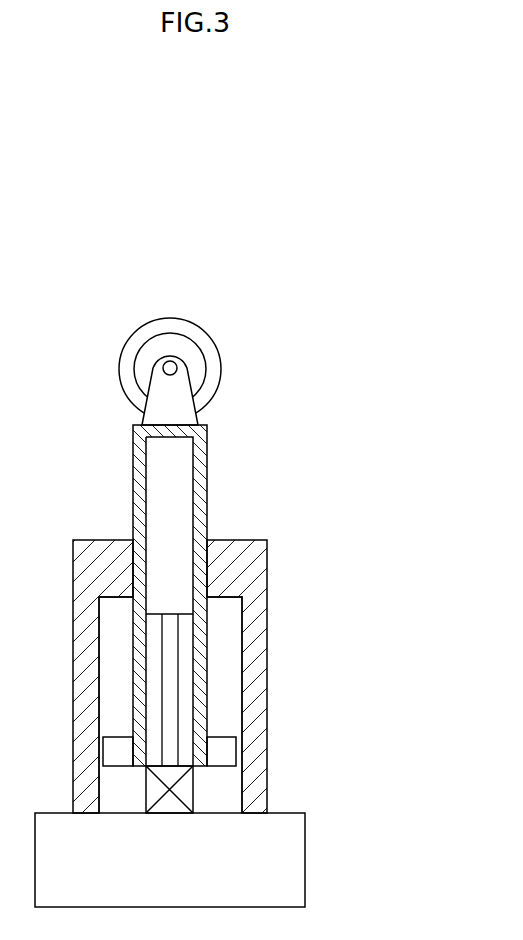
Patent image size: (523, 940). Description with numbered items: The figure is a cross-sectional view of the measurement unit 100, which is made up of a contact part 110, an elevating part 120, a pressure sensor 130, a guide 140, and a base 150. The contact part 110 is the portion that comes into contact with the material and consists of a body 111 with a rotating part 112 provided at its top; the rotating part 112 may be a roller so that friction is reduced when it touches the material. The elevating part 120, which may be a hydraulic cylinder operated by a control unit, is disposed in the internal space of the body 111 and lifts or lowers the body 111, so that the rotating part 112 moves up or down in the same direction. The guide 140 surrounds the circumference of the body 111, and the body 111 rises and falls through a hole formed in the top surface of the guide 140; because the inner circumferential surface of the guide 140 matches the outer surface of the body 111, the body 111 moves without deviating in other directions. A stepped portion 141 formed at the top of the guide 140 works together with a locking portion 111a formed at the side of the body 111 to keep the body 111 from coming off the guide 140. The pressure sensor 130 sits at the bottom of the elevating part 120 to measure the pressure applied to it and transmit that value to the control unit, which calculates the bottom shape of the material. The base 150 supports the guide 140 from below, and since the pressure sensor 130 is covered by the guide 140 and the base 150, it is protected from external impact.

The measurement unit 100 is at (410, 268).
The contact part 110 is at (342, 373).
The body 111 is at (205, 448).
The locking portion 111a is at (223, 748).
The rotating part 112 is at (213, 368).
The elevating part 120 is at (177, 532).
The pressure sensor 130 is at (185, 792).
The guide 140 is at (248, 567).
The stepped portion 141 is at (227, 597).
The base 150 is at (293, 855).